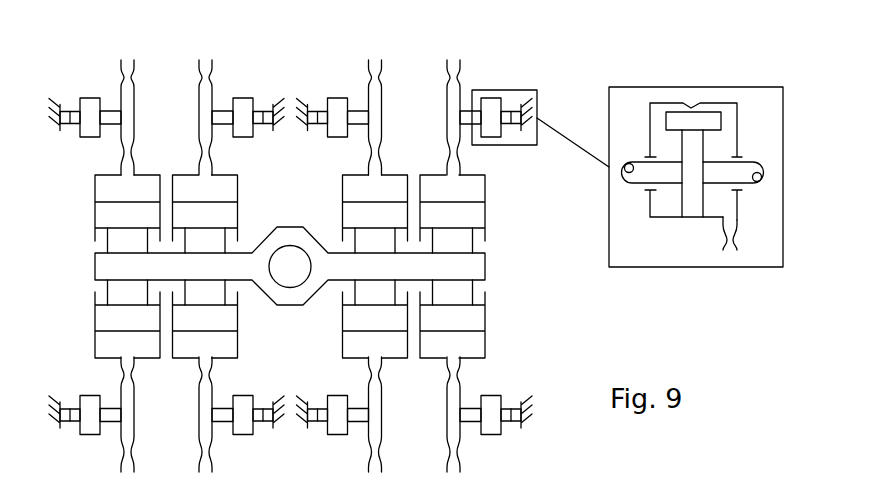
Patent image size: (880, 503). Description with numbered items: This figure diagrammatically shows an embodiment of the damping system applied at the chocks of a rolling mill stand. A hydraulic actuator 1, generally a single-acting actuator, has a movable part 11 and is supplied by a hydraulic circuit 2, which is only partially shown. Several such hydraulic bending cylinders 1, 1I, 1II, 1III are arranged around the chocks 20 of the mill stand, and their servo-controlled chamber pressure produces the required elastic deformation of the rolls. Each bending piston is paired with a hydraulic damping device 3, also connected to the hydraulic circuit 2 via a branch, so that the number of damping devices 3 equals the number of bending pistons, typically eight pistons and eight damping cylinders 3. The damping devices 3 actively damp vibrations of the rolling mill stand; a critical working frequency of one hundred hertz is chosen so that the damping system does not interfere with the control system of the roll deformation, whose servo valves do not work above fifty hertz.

The hydraulic actuator 1 is at (485, 221).
The hydraulic bending cylinder 1I is at (485, 348).
The hydraulic bending cylinder 1II is at (343, 325).
The hydraulic bending cylinder 1III is at (342, 211).
The movable part 11 is at (463, 247).
The hydraulic circuit 2 is at (461, 70).
The hydraulic damping device 3 is at (620, 70).
The chocks 20 is at (485, 270).